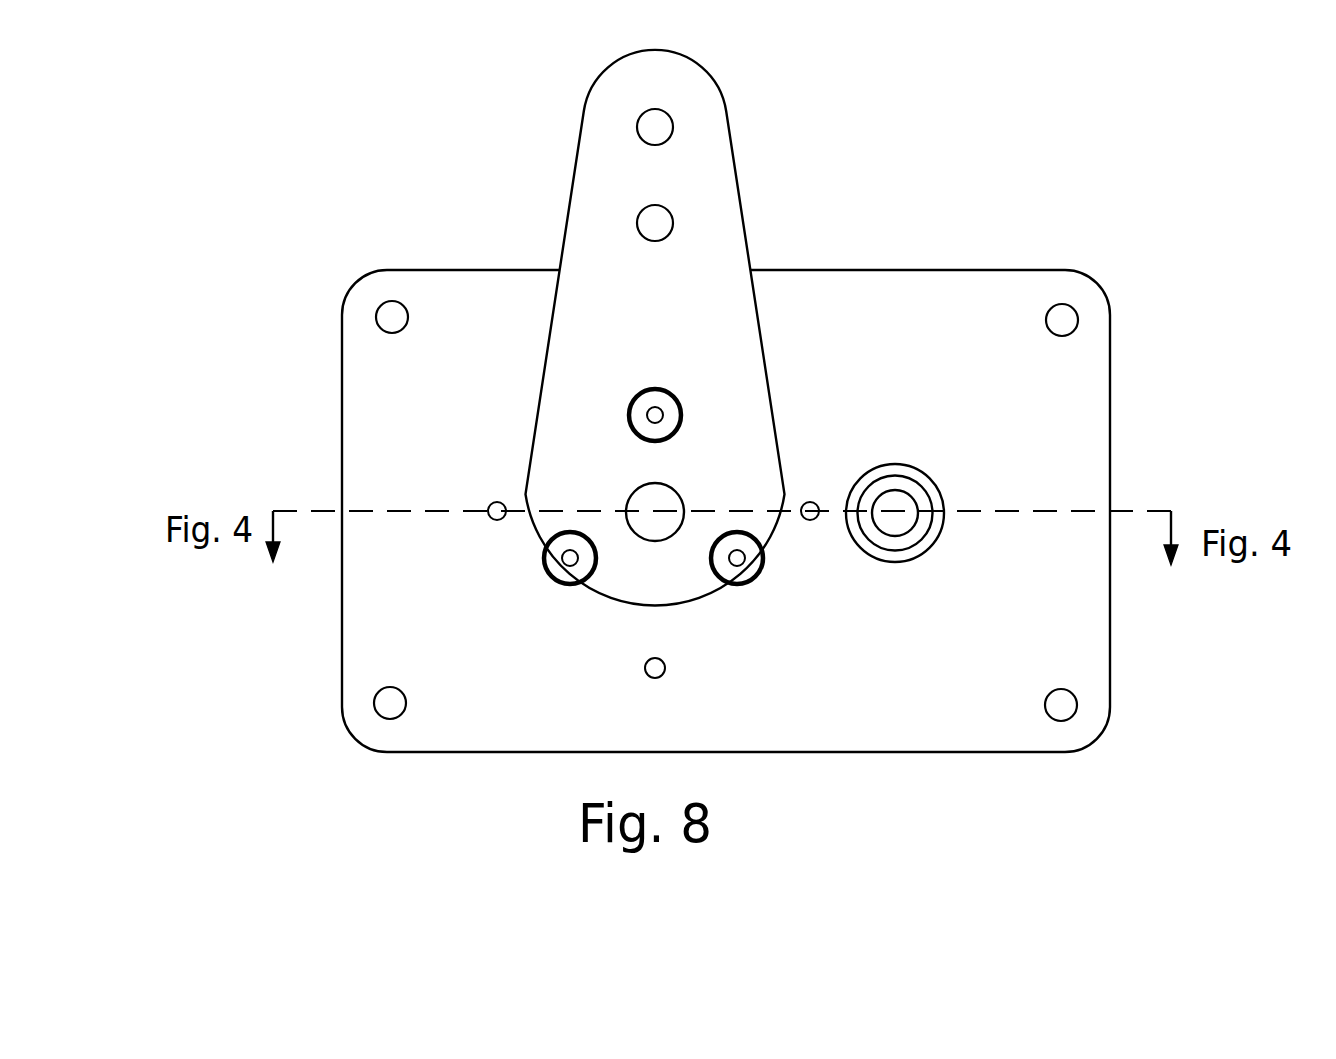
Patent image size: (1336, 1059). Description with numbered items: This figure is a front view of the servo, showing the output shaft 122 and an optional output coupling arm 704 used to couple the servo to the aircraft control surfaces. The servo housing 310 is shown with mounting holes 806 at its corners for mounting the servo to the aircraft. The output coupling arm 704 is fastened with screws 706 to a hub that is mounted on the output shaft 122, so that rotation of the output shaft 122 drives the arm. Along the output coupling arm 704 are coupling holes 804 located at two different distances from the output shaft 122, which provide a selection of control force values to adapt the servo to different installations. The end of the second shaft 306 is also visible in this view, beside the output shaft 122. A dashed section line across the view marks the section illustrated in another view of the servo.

The output shaft 122 is at (630, 493).
The second shaft 306 is at (913, 495).
The housing 310 is at (1110, 554).
The output coupling arm 704 is at (569, 202).
The screws 706 is at (680, 393).
The coupling holes 804 is at (781, 138).
The mounting holes 806 is at (1064, 304).